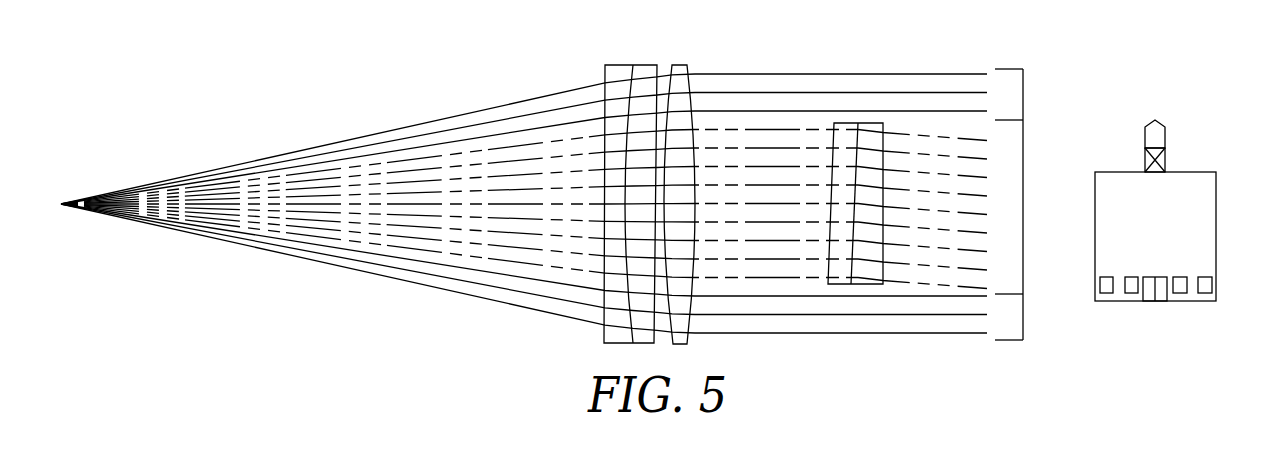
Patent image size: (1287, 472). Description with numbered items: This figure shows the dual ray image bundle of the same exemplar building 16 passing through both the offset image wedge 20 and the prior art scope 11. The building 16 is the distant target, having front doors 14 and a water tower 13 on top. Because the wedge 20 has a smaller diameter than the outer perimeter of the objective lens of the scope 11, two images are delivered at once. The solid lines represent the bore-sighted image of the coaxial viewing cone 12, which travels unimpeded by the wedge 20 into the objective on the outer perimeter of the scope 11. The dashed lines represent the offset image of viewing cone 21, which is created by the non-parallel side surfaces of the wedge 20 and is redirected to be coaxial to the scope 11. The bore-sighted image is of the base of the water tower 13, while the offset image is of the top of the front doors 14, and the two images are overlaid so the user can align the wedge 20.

The scope 11 is at (643, 108).
The viewing cone 12 is at (1023, 95).
The water tower 13 is at (1163, 138).
The front doors 14 is at (1152, 302).
The building 16 is at (1192, 235).
The wedge 20 is at (866, 268).
The viewing cone 21 is at (1023, 205).